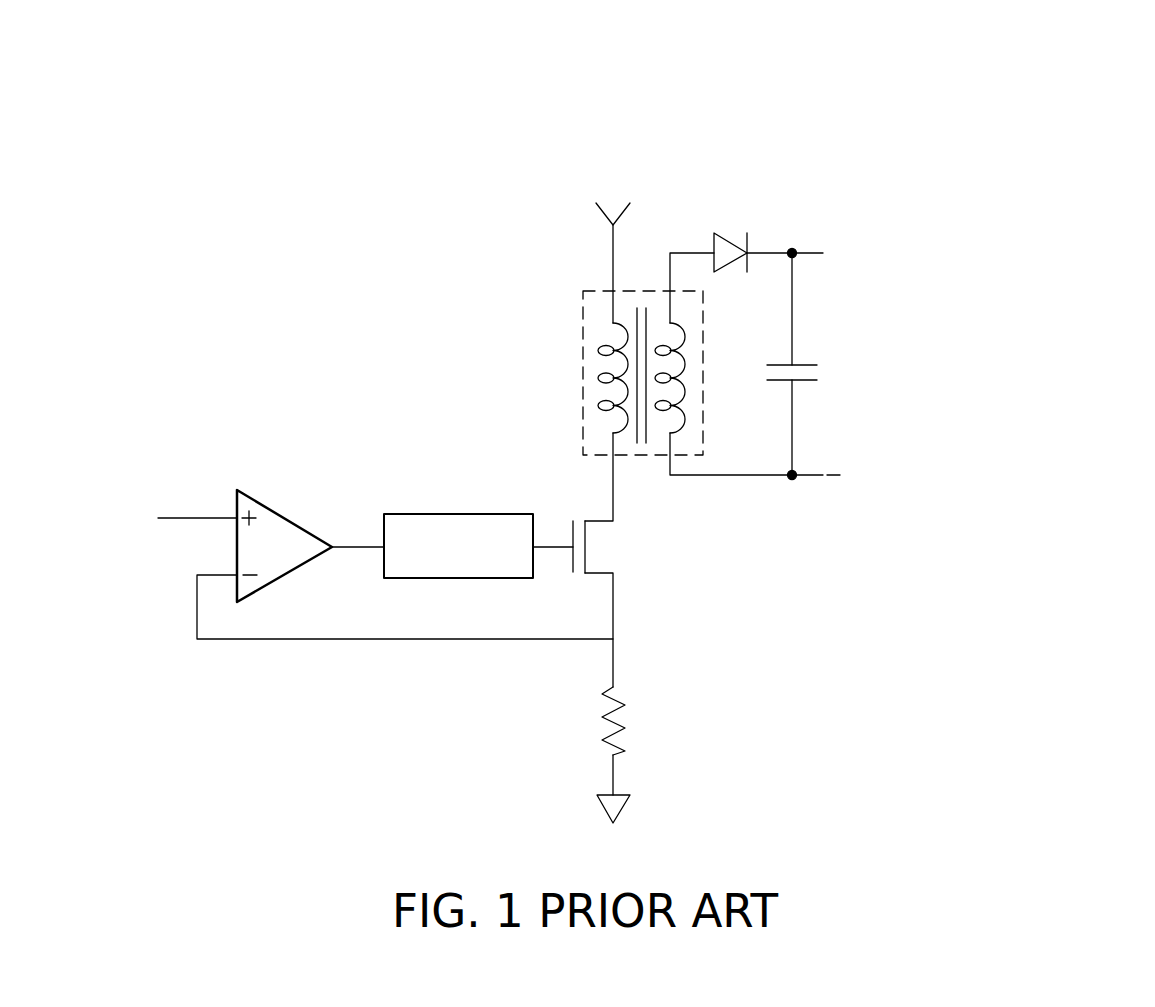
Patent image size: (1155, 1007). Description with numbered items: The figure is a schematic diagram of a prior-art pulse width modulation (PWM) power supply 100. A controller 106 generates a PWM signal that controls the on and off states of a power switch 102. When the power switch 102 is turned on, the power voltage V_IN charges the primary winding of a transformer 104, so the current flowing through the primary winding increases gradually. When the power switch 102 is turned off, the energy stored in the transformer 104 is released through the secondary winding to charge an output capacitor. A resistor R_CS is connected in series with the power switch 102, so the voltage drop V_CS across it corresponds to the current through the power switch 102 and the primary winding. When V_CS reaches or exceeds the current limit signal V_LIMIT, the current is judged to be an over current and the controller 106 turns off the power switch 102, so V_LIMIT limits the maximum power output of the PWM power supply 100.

The pulse width modulation (PWM) power supply 100 is at (616, 429).
The power switch 102 is at (613, 549).
The transformer 104 is at (583, 372).
The controller 106 is at (460, 514).